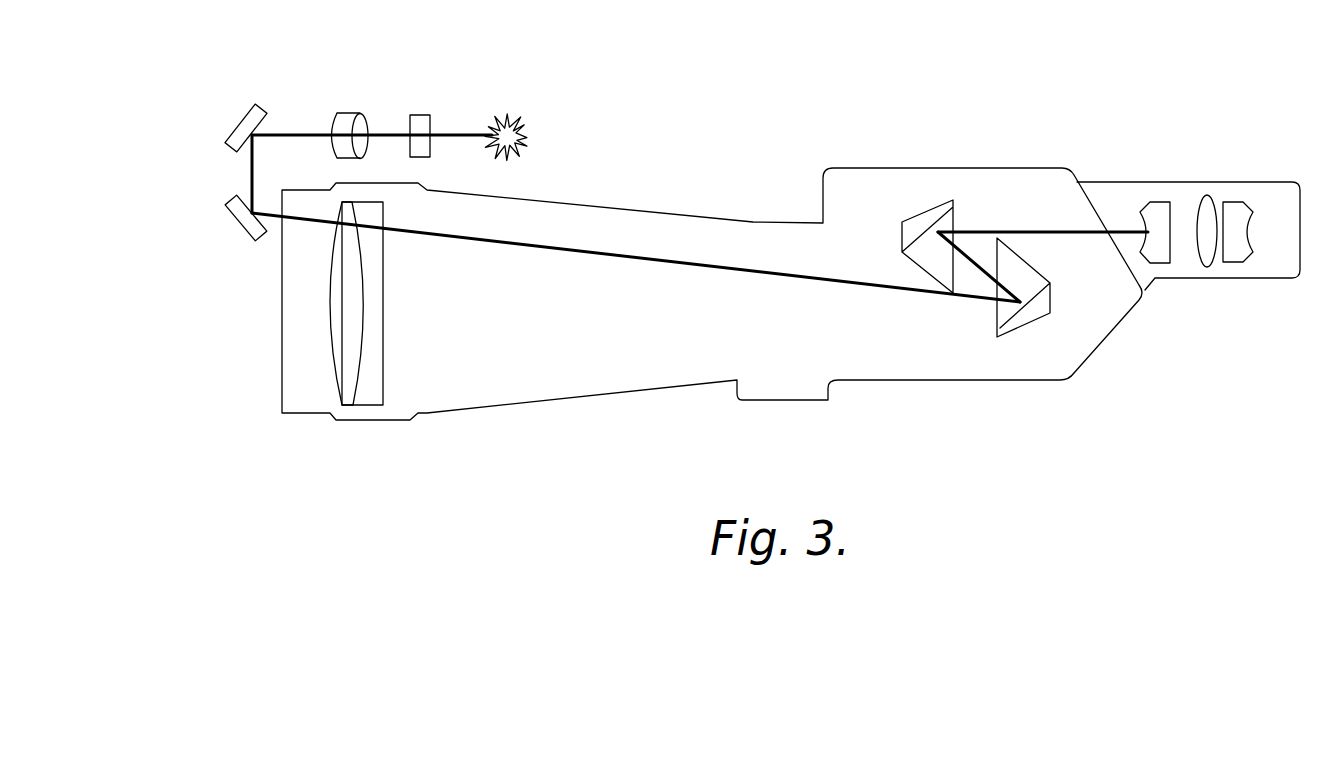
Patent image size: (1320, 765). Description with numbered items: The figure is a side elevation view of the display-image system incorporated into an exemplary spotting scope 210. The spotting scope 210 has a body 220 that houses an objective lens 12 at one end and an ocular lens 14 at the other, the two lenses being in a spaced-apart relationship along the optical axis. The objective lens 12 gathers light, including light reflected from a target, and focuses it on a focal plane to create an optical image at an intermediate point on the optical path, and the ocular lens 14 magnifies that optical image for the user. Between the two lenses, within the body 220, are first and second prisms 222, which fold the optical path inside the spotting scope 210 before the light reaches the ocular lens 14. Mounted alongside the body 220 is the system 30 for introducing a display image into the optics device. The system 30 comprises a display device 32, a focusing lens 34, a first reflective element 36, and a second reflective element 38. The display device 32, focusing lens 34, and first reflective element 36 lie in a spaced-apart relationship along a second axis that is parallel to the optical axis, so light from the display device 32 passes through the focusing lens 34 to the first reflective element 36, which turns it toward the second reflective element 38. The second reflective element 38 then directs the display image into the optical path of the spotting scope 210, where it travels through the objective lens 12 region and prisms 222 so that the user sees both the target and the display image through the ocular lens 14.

The objective lens 12 is at (368, 397).
The ocular lens 14 is at (1208, 258).
The system 30 is at (203, 130).
The display device 32 is at (448, 105).
The focusing lens 34 is at (343, 120).
The first reflective element 36 is at (247, 122).
The second reflective element 38 is at (245, 220).
The spotting scope 210 is at (1052, 135).
The body 220 is at (531, 398).
The first and second prisms 222 is at (987, 338).